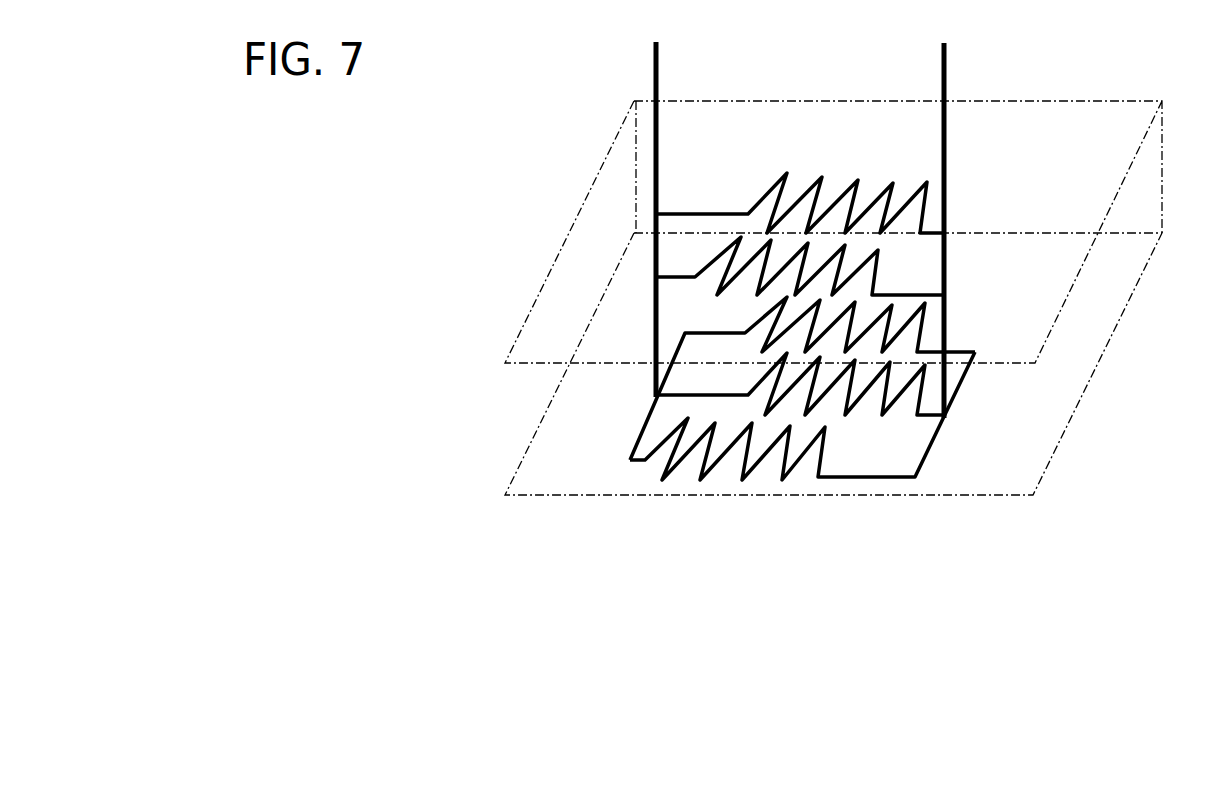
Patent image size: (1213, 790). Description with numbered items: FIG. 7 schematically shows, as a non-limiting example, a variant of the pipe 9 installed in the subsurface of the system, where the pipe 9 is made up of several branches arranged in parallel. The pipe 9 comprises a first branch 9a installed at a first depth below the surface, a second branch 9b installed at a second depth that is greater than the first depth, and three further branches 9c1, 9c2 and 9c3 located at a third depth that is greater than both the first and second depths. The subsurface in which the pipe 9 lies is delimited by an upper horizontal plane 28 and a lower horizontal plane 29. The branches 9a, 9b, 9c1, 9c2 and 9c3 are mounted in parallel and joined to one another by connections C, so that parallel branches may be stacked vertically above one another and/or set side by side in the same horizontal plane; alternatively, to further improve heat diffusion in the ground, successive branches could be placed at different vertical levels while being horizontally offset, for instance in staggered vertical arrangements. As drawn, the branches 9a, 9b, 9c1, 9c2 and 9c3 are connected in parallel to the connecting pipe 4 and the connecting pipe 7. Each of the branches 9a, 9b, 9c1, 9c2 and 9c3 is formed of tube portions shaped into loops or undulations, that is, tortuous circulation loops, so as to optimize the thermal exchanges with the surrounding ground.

The connecting pipe 4 is at (659, 95).
The connecting pipe 7 is at (948, 56).
The pipe 9 is at (537, 137).
The first branch 9a is at (757, 203).
The second branch 9b is at (718, 250).
The branch 9c1 is at (748, 330).
The branch 9c2 is at (753, 377).
The branch 9c3 is at (727, 457).
The upper horizontal plane 28 is at (1105, 207).
The lower horizontal plane 29 is at (1107, 340).
The connection C is at (648, 213).